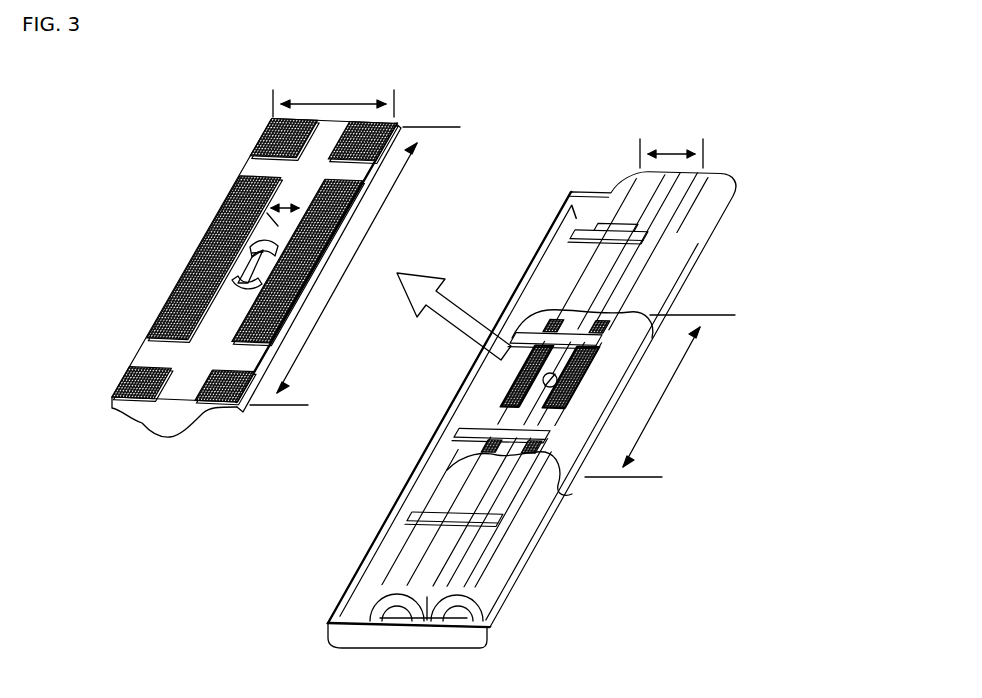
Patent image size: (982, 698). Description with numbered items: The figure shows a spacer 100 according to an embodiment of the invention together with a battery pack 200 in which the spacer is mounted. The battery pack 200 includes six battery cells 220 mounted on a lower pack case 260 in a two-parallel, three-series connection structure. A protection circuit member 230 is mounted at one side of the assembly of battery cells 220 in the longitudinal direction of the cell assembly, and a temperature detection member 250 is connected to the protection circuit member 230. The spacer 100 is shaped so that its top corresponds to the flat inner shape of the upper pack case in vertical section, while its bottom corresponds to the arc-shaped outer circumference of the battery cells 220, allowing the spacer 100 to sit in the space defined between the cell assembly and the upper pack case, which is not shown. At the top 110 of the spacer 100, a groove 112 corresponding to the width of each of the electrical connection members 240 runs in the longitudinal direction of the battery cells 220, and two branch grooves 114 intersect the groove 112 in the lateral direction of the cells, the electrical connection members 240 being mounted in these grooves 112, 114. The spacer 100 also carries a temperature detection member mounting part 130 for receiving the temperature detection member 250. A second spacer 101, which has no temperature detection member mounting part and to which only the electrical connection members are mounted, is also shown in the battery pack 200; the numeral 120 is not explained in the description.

The spacer 100 is at (250, 293).
The spacer 101 is at (343, 628).
The top of the spacer 110 is at (200, 273).
The groove 112 is at (247, 195).
The branch grooves 114 is at (163, 357).
The substrate 120 is at (142, 418).
The temperature detection member mounting part 130 is at (286, 239).
The battery pack 200 is at (524, 403).
The battery cells 220 is at (683, 242).
The protection circuit member 230 is at (430, 480).
The electrical connection members 240 is at (540, 452).
The temperature detection member 250 is at (503, 368).
The lower pack case 260 is at (397, 583).